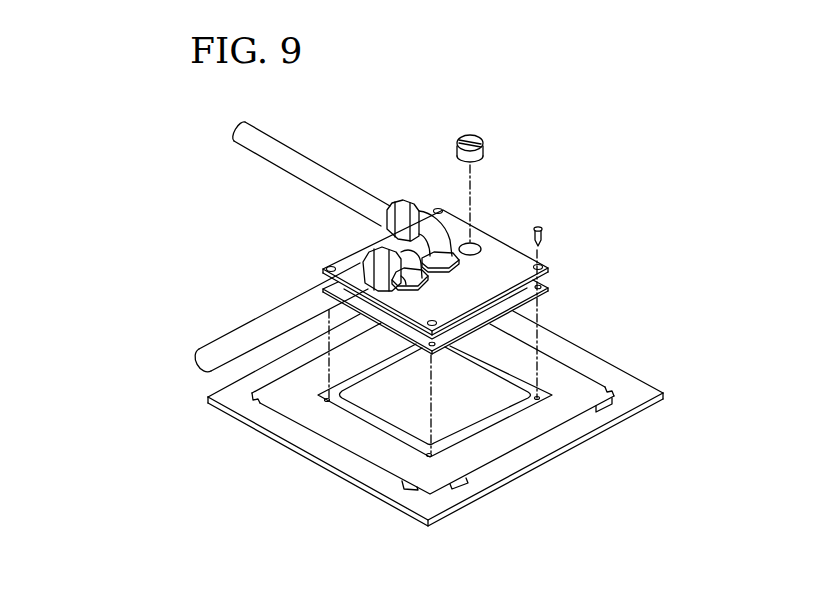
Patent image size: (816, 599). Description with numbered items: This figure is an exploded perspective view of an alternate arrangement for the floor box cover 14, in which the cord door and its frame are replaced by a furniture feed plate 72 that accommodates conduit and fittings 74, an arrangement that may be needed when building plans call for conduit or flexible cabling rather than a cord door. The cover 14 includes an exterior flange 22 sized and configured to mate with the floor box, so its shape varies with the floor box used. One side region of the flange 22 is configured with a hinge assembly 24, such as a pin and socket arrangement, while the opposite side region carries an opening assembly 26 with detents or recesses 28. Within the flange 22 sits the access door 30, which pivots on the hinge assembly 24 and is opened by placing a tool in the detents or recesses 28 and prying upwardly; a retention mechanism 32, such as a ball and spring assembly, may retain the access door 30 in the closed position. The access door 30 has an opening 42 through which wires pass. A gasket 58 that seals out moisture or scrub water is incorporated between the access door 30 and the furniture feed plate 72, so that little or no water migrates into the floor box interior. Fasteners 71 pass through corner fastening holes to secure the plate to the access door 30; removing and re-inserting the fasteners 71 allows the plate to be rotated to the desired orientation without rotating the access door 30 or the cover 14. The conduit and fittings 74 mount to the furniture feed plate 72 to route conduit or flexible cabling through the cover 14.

The cover 14 is at (592, 199).
The exterior flange 22 is at (633, 372).
The hinge assembly 24 is at (208, 398).
The opening assembly 26 is at (460, 482).
The detents or recesses 28 is at (603, 407).
The access door 30 is at (573, 387).
The retention mechanism 32 is at (412, 482).
The opening 42 is at (498, 383).
The gasket 58 is at (540, 287).
The fasteners 71 is at (538, 220).
The furniture feed plate 72 is at (500, 253).
The conduit and fittings 74 is at (336, 168).